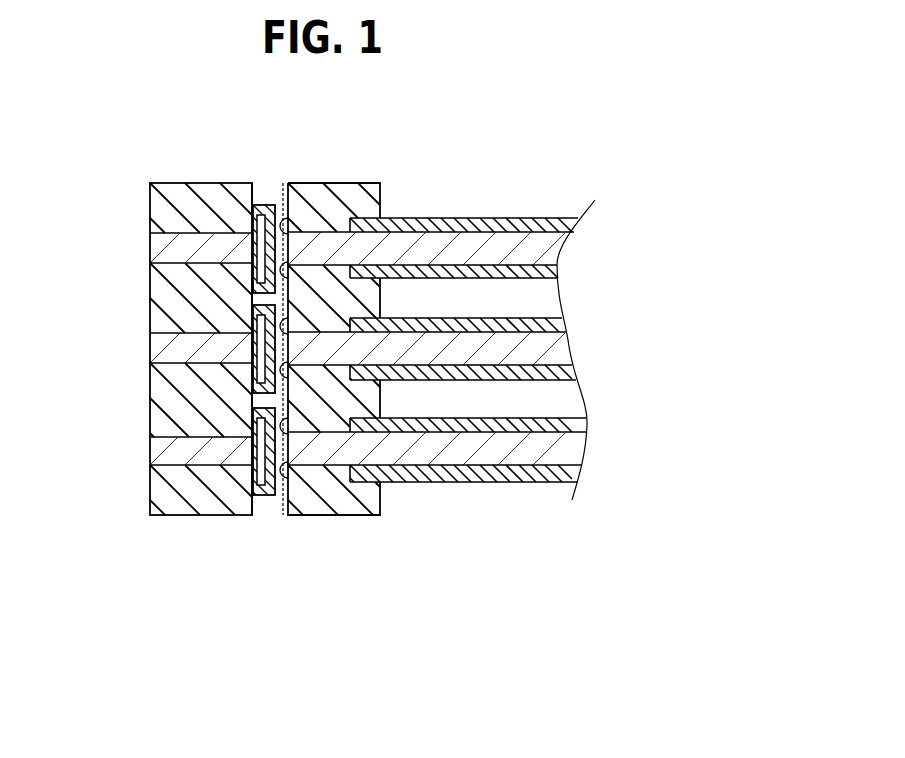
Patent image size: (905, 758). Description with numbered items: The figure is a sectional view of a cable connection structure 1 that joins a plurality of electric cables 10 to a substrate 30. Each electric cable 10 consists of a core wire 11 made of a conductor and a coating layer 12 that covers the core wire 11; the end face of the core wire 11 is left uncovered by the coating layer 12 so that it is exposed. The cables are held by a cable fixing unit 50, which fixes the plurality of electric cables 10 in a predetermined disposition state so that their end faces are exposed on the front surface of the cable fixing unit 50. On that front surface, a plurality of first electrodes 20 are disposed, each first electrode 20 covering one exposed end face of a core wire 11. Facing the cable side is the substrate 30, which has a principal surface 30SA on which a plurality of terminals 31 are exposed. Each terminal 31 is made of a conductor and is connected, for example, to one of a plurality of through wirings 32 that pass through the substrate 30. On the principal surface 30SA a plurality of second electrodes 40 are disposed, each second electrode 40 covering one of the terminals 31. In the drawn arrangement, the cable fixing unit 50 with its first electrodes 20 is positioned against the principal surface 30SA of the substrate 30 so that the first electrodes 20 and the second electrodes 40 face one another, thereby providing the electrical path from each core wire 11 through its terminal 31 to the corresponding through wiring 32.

The cable connection structure 1 is at (544, 144).
The electric cable 10 is at (493, 157).
The core wire 11 is at (428, 218).
The coating layer 12 is at (453, 218).
The first electrode 20 is at (283, 195).
The substrate 30 is at (166, 183).
The terminal 31 is at (216, 197).
The through wiring 32 is at (148, 250).
The principal surface 30SA is at (260, 512).
The second electrode 40 is at (263, 205).
The cable fixing unit 50 is at (343, 183).